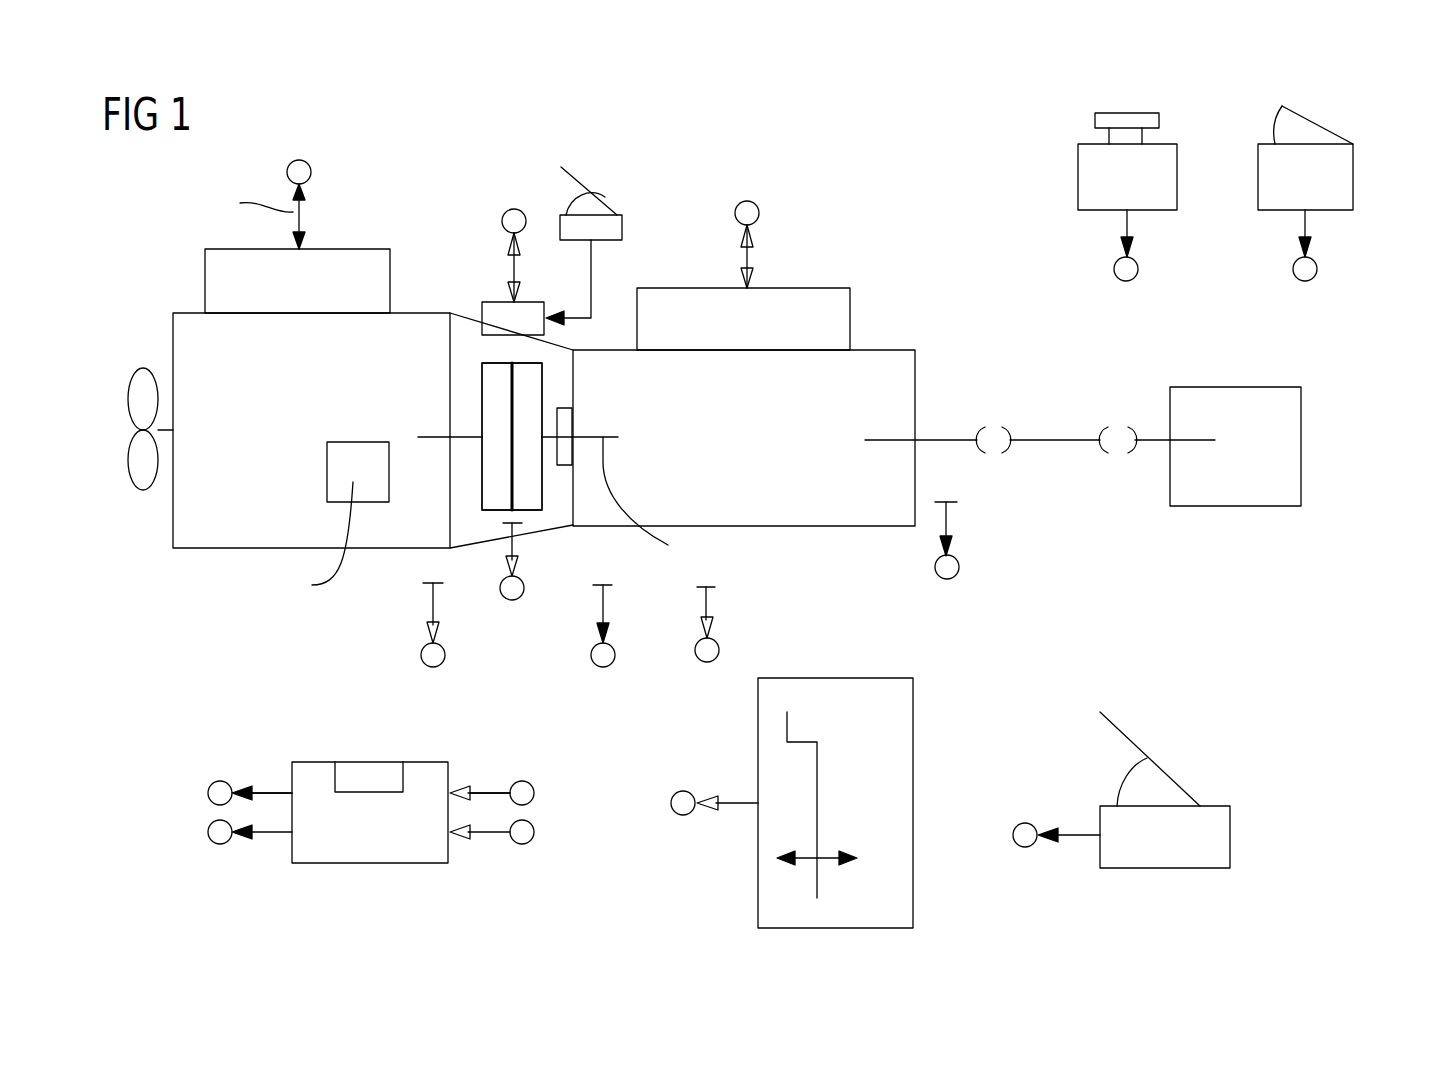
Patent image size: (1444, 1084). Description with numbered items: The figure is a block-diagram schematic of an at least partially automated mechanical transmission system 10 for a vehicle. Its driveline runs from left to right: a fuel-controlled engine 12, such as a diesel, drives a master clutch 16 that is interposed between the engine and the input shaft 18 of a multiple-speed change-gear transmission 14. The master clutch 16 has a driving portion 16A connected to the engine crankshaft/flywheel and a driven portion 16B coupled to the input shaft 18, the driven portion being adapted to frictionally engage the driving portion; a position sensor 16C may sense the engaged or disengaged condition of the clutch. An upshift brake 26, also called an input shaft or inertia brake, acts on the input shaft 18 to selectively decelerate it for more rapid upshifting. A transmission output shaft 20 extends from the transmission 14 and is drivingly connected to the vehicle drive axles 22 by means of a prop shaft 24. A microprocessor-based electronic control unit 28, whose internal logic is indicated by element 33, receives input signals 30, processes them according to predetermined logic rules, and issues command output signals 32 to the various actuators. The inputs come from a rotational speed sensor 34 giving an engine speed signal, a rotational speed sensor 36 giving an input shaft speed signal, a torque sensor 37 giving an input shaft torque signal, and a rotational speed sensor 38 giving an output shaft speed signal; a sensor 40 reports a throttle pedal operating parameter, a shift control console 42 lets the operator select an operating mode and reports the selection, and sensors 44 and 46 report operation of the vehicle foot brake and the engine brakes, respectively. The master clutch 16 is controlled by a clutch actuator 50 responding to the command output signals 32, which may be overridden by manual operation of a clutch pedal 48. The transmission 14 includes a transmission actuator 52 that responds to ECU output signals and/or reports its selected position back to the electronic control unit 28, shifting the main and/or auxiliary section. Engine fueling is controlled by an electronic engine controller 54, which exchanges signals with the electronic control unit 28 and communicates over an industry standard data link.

The automated mechanical transmission system 10 is at (918, 175).
The fuel-controlled engine 12 is at (200, 497).
The change-gear transmission 14 is at (770, 503).
The master clutch 16 is at (445, 503).
The driving portion 16A is at (492, 377).
The driven portion 16B is at (532, 487).
The position sensor 16C is at (525, 545).
The input shaft 18 is at (655, 498).
The transmission output shaft 20 is at (955, 440).
The vehicle drive axles 22 is at (1237, 415).
The prop shaft 24 is at (1040, 442).
The upshift brake 26 is at (565, 417).
The electronic control unit 28 is at (368, 852).
The input signals 30 is at (492, 882).
The command output signals 32 is at (268, 882).
The control logic 33 is at (376, 775).
The rotational speed sensor 34 is at (437, 596).
The rotational speed sensor 36 is at (607, 595).
The torque sensor 37 is at (711, 600).
The rotational speed sensor 38 is at (950, 515).
The throttle pedal sensor 40 is at (1170, 852).
The shift control console 42 is at (720, 730).
The foot brake sensor 44 is at (1320, 180).
The engine brake sensor 46 is at (1100, 177).
The clutch pedal 48 is at (612, 231).
The clutch actuator 50 is at (497, 312).
The transmission actuator 52 is at (797, 312).
The electronic engine controller 54 is at (335, 272).